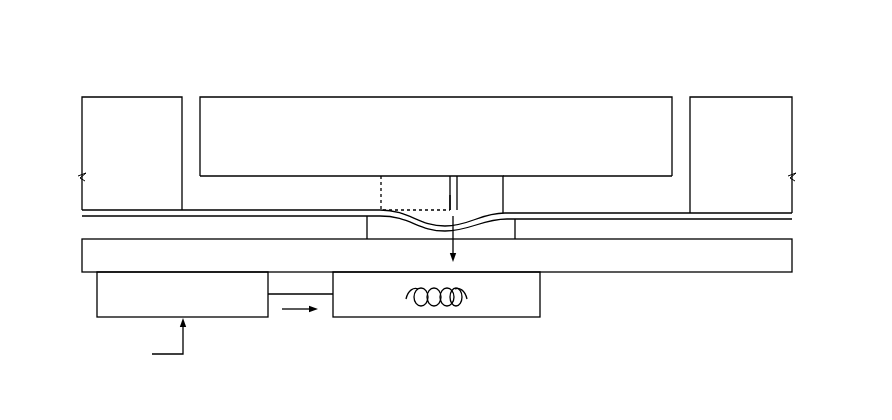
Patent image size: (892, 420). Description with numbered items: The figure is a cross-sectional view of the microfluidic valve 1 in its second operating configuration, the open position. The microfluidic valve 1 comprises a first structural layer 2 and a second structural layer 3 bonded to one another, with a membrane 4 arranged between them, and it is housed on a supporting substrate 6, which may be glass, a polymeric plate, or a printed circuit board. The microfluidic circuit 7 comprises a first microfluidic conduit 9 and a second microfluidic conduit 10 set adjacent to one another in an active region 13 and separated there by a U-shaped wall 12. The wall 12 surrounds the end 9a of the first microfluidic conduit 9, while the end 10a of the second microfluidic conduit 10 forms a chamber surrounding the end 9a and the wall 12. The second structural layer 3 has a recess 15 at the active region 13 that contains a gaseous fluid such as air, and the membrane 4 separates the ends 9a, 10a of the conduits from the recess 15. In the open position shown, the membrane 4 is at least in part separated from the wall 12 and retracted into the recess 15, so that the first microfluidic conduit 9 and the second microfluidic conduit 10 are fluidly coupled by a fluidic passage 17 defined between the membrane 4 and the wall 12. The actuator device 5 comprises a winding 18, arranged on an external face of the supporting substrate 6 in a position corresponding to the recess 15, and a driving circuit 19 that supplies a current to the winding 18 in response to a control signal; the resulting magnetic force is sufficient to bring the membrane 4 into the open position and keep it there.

The microfluidic valve 1 is at (706, 75).
The first structural layer 2 is at (102, 117).
The second structural layer 3 is at (716, 234).
The membrane 4 is at (663, 214).
The actuator device 5 is at (325, 341).
The supporting substrate 6 is at (758, 263).
The microfluidic circuit 7 is at (323, 128).
The first microfluidic conduit 9 is at (275, 188).
The end of the first microfluidic conduit 9a is at (398, 183).
The second microfluidic conduit 10 is at (605, 182).
The end of the second microfluidic conduit 10a is at (494, 182).
The wall 12 is at (450, 187).
The active region 13 is at (425, 154).
The recess 15 is at (511, 228).
The fluidic passage 17 is at (464, 206).
The winding 18 is at (530, 309).
The driving circuit 19 is at (255, 308).